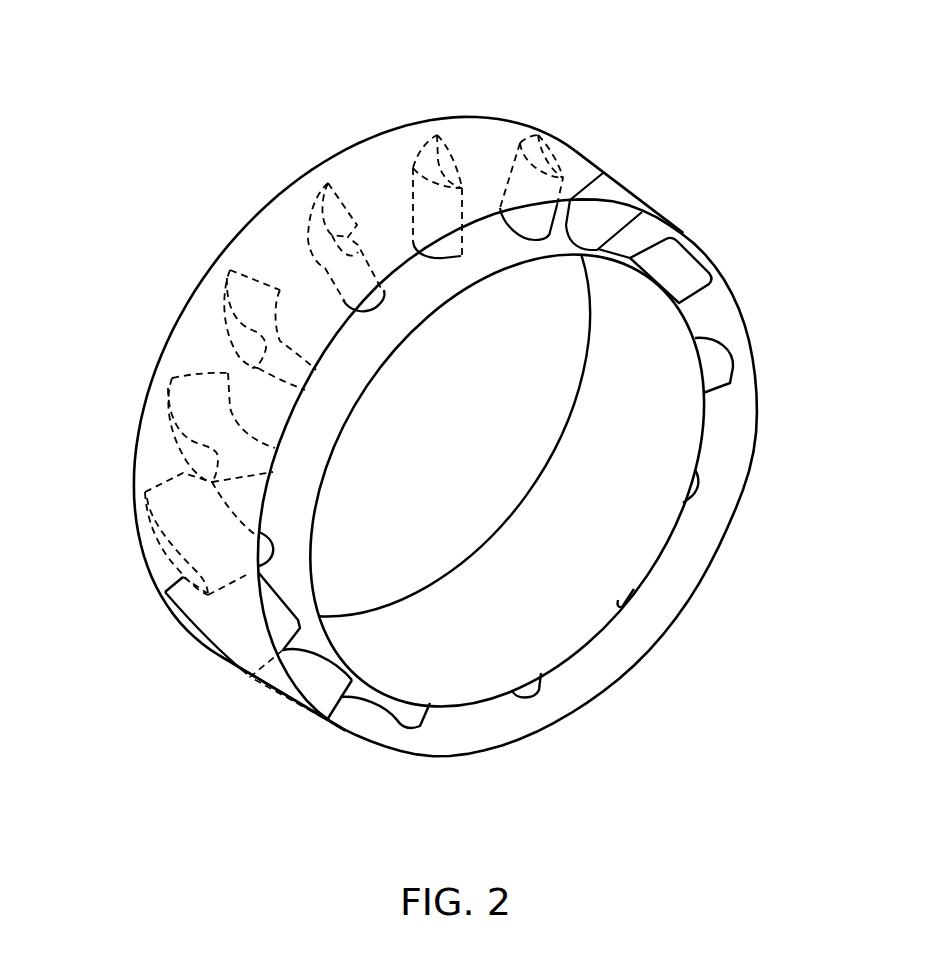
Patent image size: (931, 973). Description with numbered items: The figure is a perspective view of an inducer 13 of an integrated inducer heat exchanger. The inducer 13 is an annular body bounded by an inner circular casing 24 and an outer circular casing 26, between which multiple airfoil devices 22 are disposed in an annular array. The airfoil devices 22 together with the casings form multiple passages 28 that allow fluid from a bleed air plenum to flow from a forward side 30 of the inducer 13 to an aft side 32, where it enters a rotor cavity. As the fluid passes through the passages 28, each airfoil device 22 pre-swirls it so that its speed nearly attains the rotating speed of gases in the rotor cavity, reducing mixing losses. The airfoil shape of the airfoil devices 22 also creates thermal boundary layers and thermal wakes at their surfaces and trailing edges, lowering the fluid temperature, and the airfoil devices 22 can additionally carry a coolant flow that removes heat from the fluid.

The inducer 13 is at (737, 77).
The airfoil devices 22 is at (413, 168).
The inner circular casing 24 is at (521, 522).
The outer circular casing 26 is at (262, 232).
The passages 28 is at (710, 307).
The forward side 30 is at (682, 630).
The aft side 32 is at (146, 339).